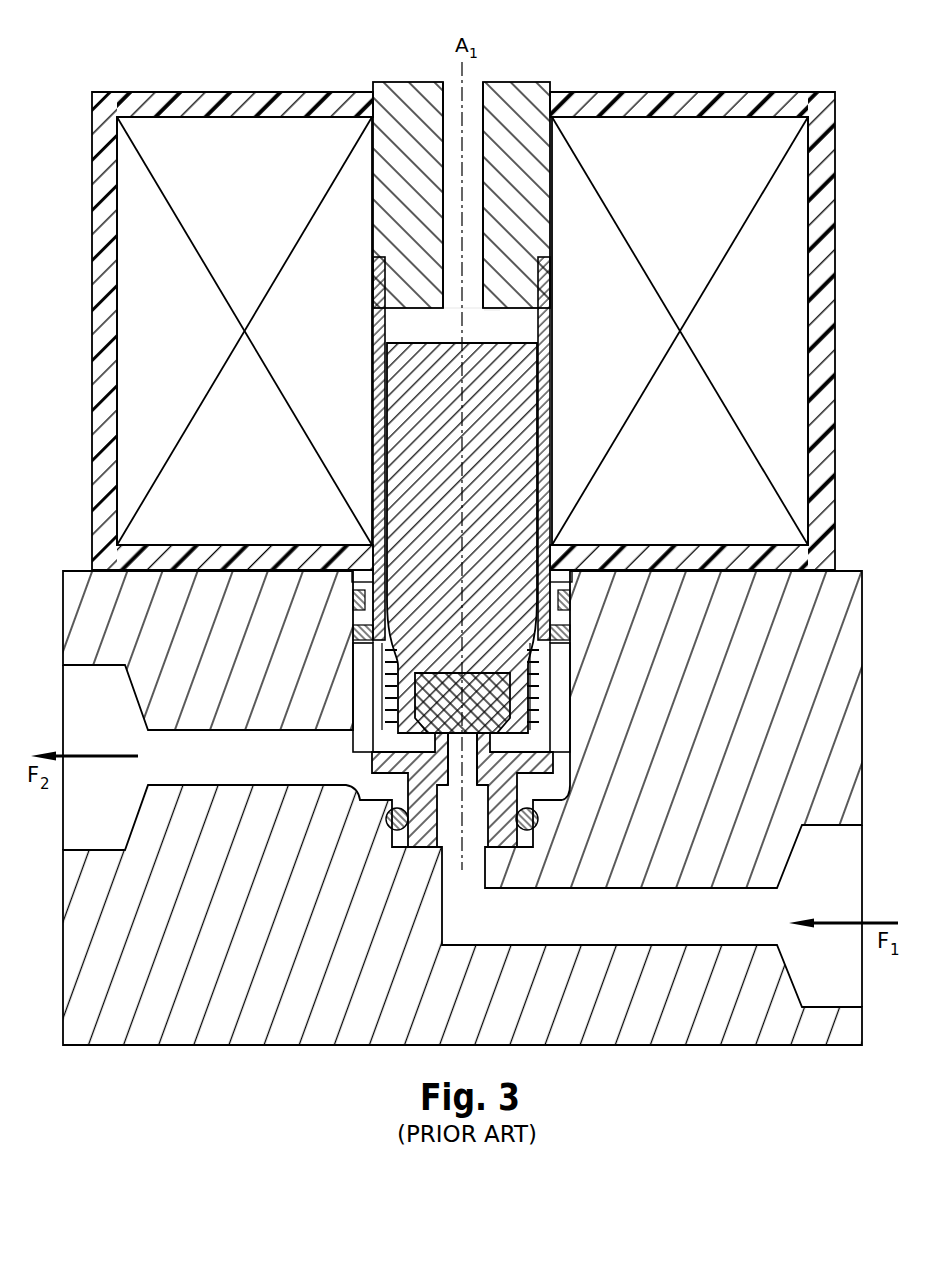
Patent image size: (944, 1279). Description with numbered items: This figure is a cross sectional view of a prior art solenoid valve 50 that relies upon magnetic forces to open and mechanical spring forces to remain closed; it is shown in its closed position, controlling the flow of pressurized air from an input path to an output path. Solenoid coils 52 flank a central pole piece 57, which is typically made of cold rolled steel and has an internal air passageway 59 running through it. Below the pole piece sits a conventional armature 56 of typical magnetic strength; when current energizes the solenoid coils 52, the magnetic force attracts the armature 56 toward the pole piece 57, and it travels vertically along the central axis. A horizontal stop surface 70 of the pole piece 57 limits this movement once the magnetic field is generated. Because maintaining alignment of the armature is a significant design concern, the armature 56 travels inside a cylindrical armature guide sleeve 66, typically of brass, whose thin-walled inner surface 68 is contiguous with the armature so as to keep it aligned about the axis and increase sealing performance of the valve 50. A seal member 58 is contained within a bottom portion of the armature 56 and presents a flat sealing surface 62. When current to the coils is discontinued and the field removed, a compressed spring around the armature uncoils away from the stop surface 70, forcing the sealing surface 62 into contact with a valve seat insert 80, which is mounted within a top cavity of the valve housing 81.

The solenoid valve 50 is at (66, 74).
The solenoid coils 52 is at (227, 157).
The armature 56 is at (417, 383).
The pole piece 57 is at (525, 108).
The seal member 58 is at (435, 688).
The internal air passageway 59 is at (476, 102).
The sealing surface 62 is at (467, 742).
The armature guide sleeve 66 is at (374, 440).
The thin-walled inner surface 68 is at (392, 322).
The horizontal stop surface 70 is at (496, 321).
The valve seat insert 80 is at (545, 765).
The valve housing 81 is at (798, 690).